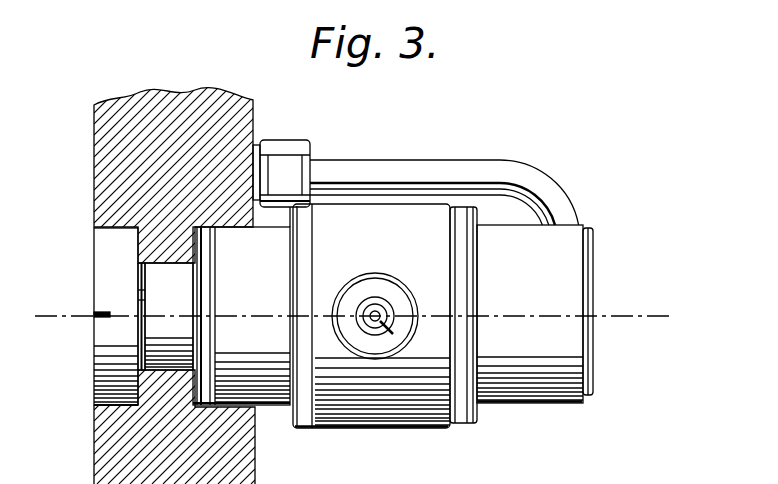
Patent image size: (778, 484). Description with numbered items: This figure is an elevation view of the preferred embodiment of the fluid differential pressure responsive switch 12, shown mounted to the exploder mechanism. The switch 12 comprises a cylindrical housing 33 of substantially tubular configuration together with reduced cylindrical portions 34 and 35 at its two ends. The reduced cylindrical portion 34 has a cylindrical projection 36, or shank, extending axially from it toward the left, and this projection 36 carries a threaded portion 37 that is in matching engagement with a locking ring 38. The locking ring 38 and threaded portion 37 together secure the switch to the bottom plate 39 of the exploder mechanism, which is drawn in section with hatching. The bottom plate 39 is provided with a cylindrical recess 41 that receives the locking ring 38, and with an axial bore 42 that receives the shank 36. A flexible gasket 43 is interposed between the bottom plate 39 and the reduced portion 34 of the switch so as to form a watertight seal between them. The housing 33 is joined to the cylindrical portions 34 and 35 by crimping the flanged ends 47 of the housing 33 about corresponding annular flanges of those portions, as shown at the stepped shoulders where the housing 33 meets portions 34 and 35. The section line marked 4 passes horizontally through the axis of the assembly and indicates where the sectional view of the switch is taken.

The section line 4- 4 is at (45, 262).
The differential fluid pressure responsive switch 12 is at (428, 148).
The cylindrical housing 33 is at (425, 430).
The reduced cylindrical portion 34 is at (272, 405).
The reduced cylindrical portion 35 is at (548, 403).
The cylindrical projection 36 is at (169, 316).
The threaded portion 37 is at (140, 298).
The locking ring 38 is at (108, 245).
The bottom plate 39 is at (94, 465).
The cylindrical recess 41 is at (94, 407).
The axial bore 42 is at (140, 270).
The flexible gasket 43 is at (207, 270).
The flanged ends 47 is at (302, 430).